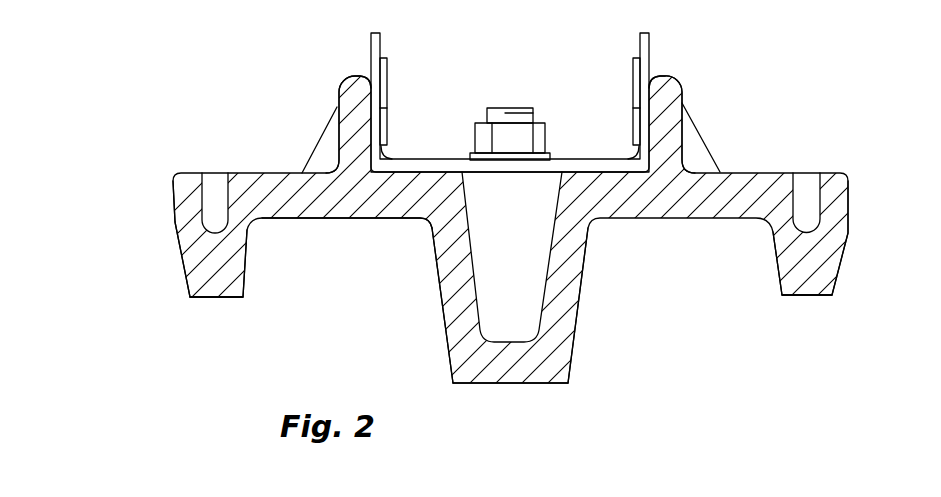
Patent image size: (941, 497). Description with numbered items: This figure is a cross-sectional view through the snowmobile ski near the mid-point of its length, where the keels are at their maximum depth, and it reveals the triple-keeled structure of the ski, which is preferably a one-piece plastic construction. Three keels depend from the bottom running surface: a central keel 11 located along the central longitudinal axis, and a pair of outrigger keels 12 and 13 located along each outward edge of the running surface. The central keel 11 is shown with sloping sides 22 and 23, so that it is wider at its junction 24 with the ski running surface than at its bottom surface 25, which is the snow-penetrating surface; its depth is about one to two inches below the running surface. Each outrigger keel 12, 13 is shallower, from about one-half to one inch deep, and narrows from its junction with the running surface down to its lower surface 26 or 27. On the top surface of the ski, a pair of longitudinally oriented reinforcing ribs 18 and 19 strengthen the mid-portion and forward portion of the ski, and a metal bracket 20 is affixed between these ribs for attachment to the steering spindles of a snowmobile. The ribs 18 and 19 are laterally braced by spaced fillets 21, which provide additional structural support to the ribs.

The central keel 11 is at (562, 357).
The outrigger keel 12 is at (182, 268).
The outrigger keel 13 is at (847, 257).
The reinforcing rib 18 is at (353, 75).
The reinforcing rib 19 is at (678, 80).
The metal bracket 20 is at (381, 48).
The fillet 21 is at (325, 153).
The sloping side 22 is at (433, 280).
The sloping side 23 is at (583, 295).
The junction 24 is at (410, 226).
The bottom surface 25 is at (482, 387).
The lower surface 26 is at (200, 300).
The lower surface 27 is at (807, 297).